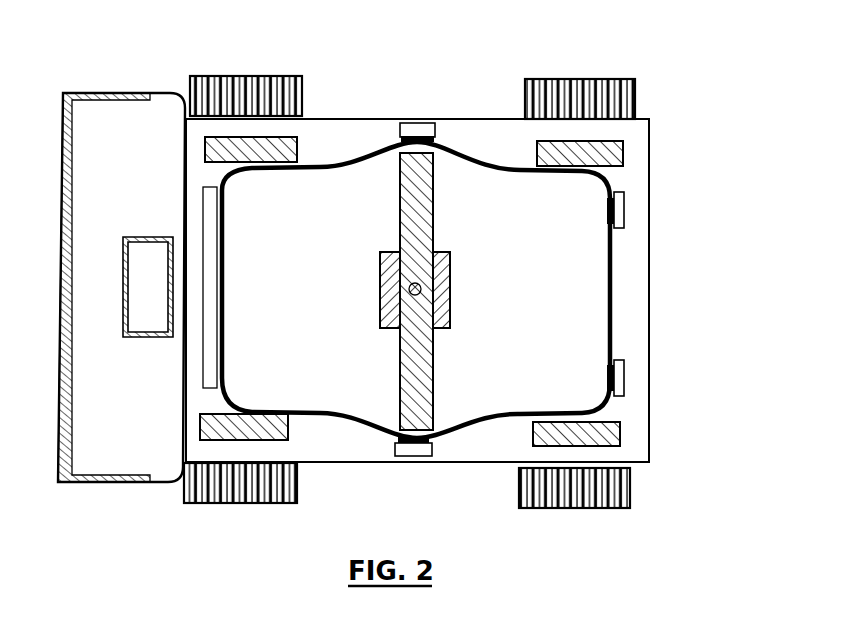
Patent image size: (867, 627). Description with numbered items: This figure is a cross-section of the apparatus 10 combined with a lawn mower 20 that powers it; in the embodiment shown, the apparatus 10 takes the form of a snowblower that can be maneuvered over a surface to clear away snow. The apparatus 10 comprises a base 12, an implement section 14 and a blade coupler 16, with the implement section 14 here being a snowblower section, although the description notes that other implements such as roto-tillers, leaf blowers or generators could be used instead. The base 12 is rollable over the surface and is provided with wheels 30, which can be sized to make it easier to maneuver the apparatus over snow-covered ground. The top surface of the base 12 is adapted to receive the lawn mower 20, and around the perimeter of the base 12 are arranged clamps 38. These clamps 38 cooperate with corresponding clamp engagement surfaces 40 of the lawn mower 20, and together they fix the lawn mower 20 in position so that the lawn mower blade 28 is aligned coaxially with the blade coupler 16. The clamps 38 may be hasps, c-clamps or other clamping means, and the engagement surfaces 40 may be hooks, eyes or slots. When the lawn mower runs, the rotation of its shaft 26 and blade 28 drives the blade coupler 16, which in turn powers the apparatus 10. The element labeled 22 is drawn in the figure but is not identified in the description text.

The apparatus 10 is at (672, 113).
The base 12 is at (637, 300).
The implement section 14 is at (114, 107).
The blade coupler 16 is at (441, 318).
The lawn mower 20 is at (463, 158).
The hatched block 22 is at (263, 152).
The shaft 26 is at (395, 296).
The lawn mower blade 28 is at (430, 432).
The wheels 30 is at (301, 96).
The clamps 38 is at (420, 127).
The clamp engagement surfaces 40 is at (399, 143).